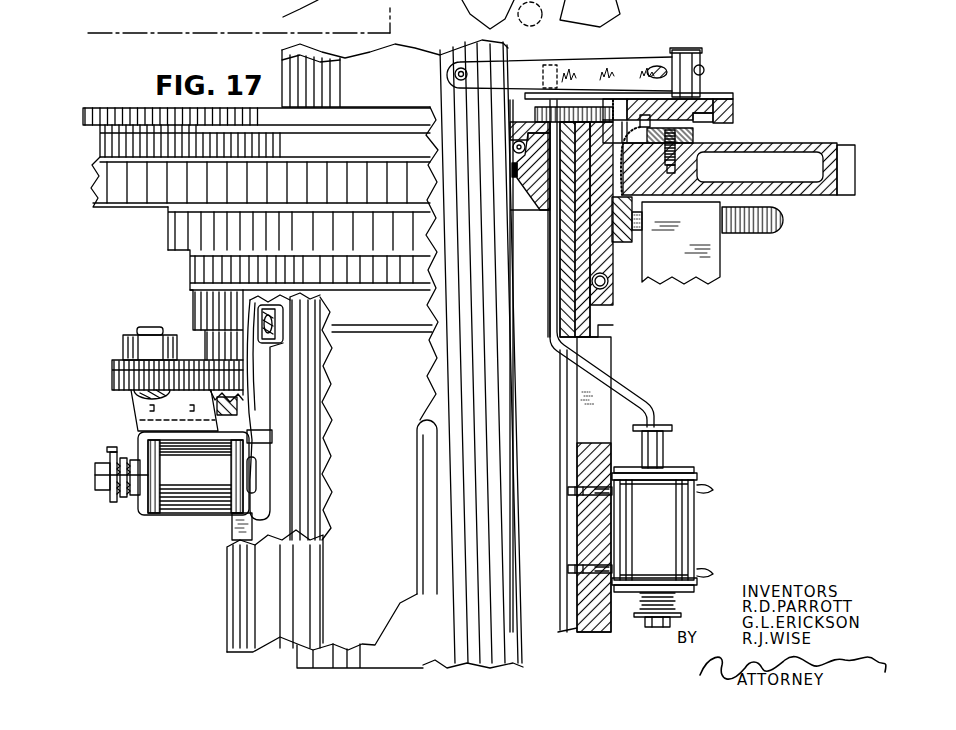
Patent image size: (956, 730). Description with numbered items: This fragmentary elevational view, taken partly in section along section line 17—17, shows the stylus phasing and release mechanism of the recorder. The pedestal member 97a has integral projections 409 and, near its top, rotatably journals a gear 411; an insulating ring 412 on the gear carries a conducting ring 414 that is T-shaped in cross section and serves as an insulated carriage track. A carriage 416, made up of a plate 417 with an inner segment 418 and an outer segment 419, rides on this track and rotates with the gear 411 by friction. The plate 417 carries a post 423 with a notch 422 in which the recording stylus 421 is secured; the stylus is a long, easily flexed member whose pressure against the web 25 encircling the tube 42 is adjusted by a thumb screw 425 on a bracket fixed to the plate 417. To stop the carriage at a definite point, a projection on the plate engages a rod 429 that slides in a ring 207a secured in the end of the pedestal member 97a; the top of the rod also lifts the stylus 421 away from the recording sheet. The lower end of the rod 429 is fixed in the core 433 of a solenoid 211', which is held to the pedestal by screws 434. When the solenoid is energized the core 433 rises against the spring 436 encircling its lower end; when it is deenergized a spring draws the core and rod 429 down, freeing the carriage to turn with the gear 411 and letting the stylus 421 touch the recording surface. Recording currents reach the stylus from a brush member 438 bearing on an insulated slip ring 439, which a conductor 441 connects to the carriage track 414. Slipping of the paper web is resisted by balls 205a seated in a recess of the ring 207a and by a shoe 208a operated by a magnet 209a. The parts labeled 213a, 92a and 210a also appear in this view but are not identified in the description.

The section line 17 is at (110, 23).
The web 25 is at (382, 62).
The tube 42 is at (437, 48).
The pedestal member 97a is at (252, 607).
The shoe 208a is at (283, 323).
The mounting plate 213a is at (113, 360).
The bolt 92a is at (146, 329).
The integral projections 409 is at (114, 388).
The magnet 209a is at (212, 507).
The shaft 210a is at (131, 498).
The insulated slip ring 439 is at (170, 233).
The recording stylus 421 is at (592, 63).
The rod 429 is at (547, 64).
The notch 422 is at (672, 34).
The post 423 is at (703, 63).
The thumb screw 425 is at (656, 66).
The plate 417 is at (720, 95).
The conducting ring 414 is at (700, 99).
The outer segment 419 is at (733, 117).
The carriage 416 is at (741, 112).
The inner segment 418 is at (612, 103).
The insulating ring 412 is at (693, 140).
The gear 411 is at (793, 157).
The conductor 441 is at (630, 150).
The brush member 438 is at (626, 243).
The ring 207a is at (527, 158).
The balls 205a is at (512, 147).
The core 433 is at (661, 452).
The solenoid 211' is at (680, 529).
The screws 434 is at (580, 568).
The spring 436 is at (638, 600).